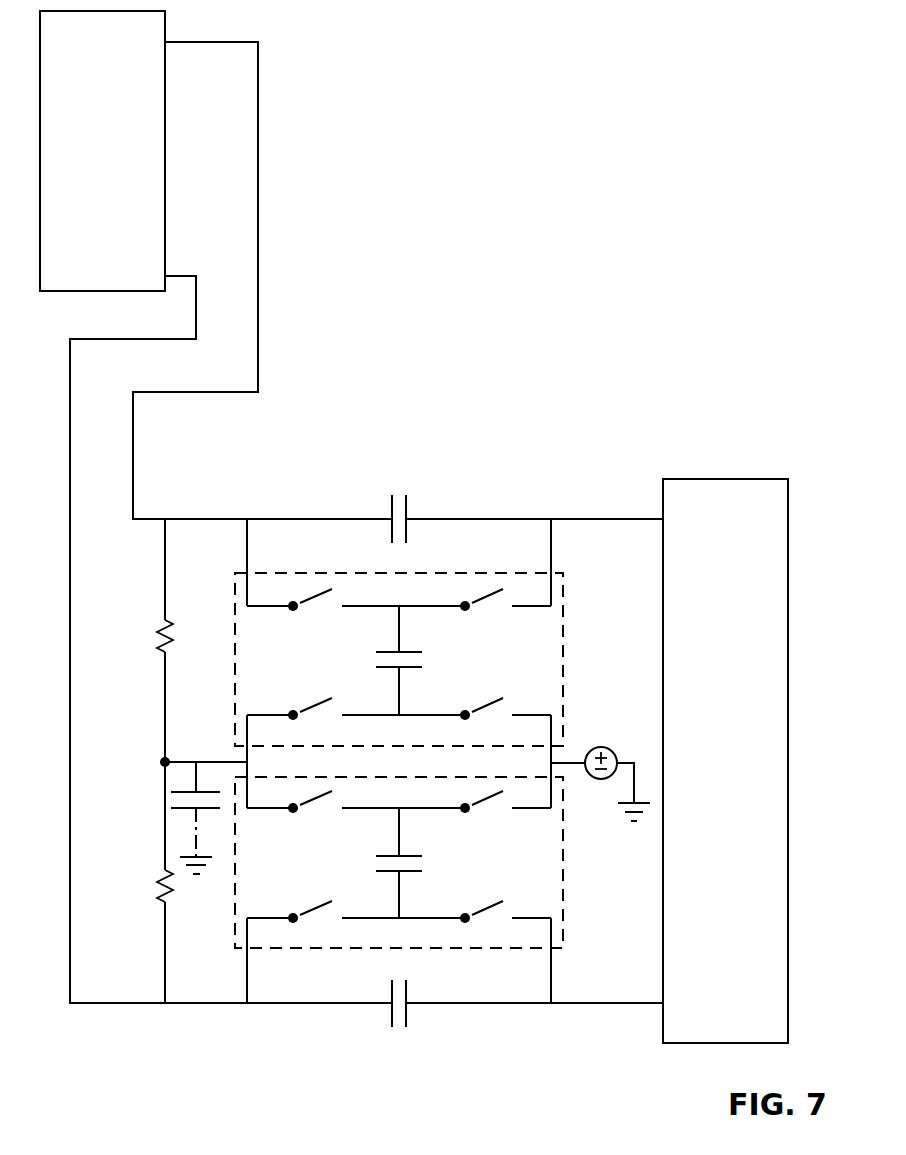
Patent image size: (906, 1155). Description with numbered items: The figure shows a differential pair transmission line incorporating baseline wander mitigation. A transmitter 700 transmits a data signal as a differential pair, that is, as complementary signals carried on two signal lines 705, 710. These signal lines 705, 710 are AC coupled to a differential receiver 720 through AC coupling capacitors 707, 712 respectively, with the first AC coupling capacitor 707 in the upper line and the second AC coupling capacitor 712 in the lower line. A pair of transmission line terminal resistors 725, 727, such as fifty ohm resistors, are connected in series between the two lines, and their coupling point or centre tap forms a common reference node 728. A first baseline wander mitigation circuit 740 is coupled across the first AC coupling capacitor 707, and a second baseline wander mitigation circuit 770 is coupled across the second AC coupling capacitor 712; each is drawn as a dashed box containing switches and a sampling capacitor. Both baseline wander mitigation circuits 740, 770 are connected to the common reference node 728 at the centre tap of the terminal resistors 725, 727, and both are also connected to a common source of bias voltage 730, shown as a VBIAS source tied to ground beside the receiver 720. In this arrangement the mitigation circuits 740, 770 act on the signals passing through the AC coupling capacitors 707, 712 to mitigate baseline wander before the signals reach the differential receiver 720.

The transmitter 700 is at (102, 151).
The signal line 705 is at (230, 40).
The signal line 710 is at (176, 275).
The AC coupling capacitor 707 is at (408, 474).
The AC coupling capacitor 712 is at (406, 1052).
The differential receiver 720 is at (725, 761).
The transmission line terminal resistor 725 is at (160, 628).
The transmission line terminal resistor 727 is at (160, 875).
The common reference node 728 is at (163, 758).
The common source of bias voltage 730 is at (597, 743).
The first baseline wander mitigation circuit 740 is at (563, 575).
The second baseline wander mitigation circuit 770 is at (563, 950).